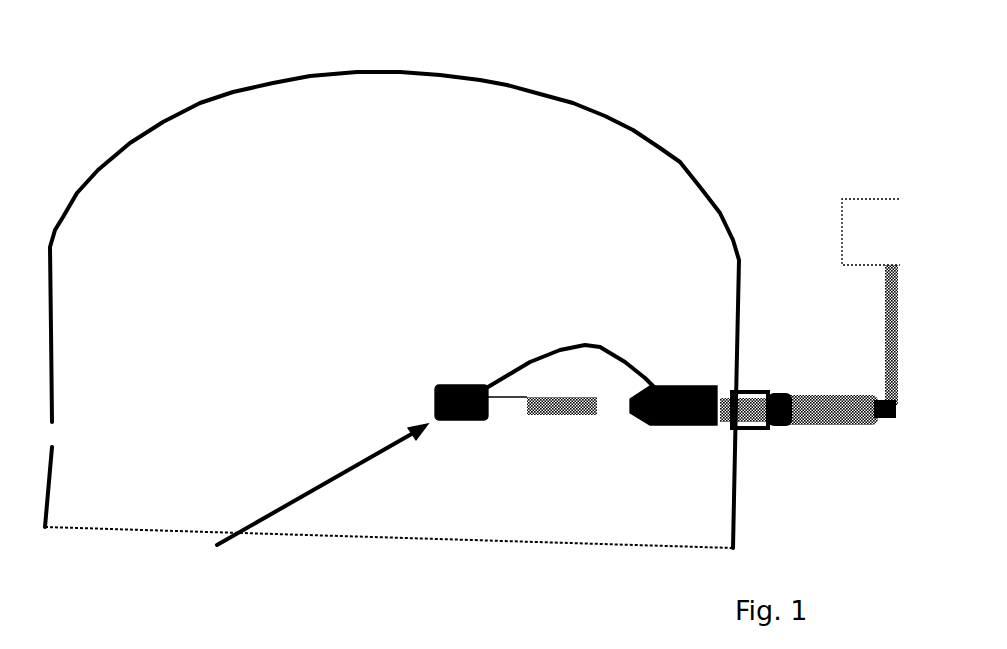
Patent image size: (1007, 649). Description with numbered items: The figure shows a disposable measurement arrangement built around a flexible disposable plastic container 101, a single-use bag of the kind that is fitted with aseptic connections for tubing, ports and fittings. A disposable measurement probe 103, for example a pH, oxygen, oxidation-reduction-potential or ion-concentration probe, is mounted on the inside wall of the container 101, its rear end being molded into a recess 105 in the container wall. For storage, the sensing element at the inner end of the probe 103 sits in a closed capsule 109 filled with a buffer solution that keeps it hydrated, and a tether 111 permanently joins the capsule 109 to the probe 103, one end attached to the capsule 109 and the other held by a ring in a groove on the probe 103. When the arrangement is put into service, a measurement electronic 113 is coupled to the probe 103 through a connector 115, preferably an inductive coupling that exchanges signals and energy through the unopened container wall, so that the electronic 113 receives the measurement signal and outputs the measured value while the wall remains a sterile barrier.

The flexible disposable plastic container 101 is at (273, 80).
The disposable measurement probe 103 is at (597, 415).
The recess 105 is at (762, 390).
The closed capsule 109 is at (309, 507).
The tether 111 is at (600, 343).
The measurement electronic 113 is at (870, 214).
The connector 115 is at (807, 430).